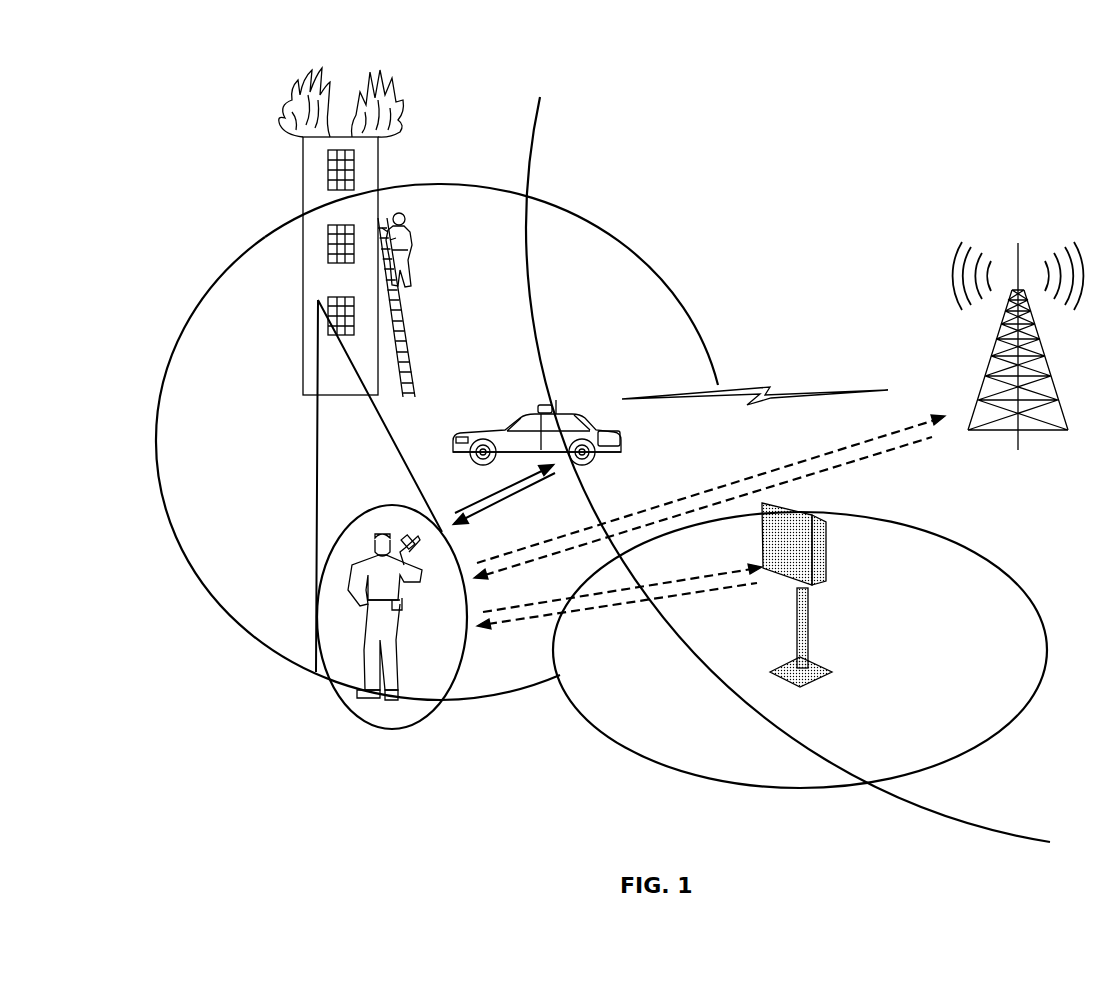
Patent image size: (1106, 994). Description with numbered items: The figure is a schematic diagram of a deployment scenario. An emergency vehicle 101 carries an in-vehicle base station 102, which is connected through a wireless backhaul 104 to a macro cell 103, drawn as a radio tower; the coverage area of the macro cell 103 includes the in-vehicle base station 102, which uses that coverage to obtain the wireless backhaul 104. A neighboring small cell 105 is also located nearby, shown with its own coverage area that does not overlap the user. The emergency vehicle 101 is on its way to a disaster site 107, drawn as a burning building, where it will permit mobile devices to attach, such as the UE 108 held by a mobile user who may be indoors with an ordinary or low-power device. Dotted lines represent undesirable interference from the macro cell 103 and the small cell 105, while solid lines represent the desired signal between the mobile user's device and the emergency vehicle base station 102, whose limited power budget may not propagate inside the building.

The emergency vehicle 101 is at (536, 419).
The in-vehicle base station 102 is at (605, 434).
The macro cell 103 is at (988, 382).
The wireless backhaul 104 is at (772, 386).
The neighboring small cell 105 is at (841, 660).
The disaster site 107 is at (293, 200).
The UE held by a mobile user 108 is at (405, 658).